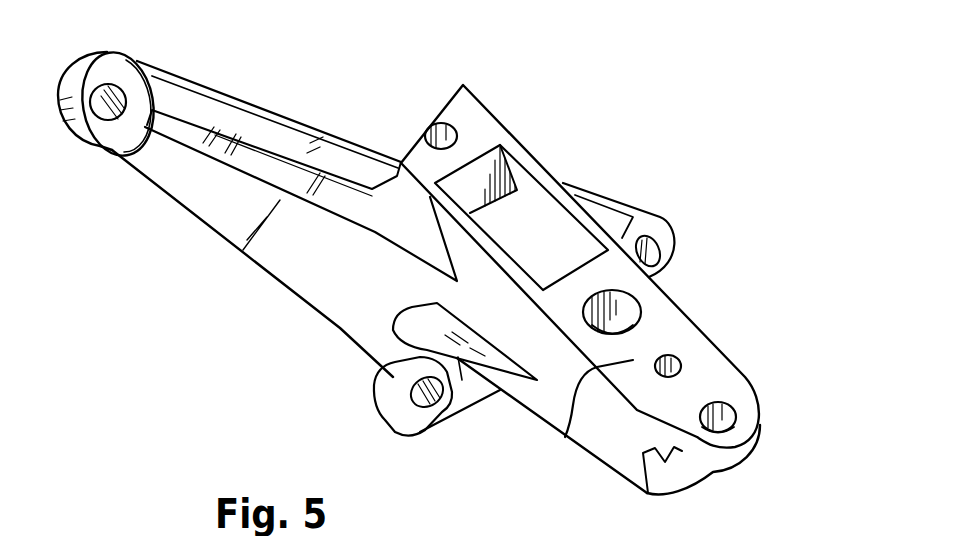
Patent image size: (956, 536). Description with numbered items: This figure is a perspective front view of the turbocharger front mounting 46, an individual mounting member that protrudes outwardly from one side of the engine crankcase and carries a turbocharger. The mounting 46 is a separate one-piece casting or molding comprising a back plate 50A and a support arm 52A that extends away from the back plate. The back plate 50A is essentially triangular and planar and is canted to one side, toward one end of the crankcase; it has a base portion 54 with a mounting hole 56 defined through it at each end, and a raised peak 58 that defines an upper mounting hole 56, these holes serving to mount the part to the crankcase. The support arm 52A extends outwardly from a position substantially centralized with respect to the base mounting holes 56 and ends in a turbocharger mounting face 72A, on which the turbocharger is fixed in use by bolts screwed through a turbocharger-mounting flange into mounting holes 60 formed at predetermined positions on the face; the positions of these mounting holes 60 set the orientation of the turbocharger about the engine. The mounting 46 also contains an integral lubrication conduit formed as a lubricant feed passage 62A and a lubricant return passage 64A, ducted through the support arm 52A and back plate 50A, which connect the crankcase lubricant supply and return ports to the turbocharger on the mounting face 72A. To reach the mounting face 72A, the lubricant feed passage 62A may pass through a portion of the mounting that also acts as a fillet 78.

The turbocharger front mounting 46 is at (553, 106).
The back plate 50A is at (322, 273).
The support arm 52A is at (632, 448).
The base portion 54 is at (497, 400).
The mounting hole 56 is at (128, 83).
The raised peak 58 is at (275, 107).
The mounting hole 60 is at (442, 124).
The lubricant feed passage 62A is at (677, 358).
The lubricant return passage 64A is at (637, 311).
The turbocharger mounting face 72A is at (573, 428).
The fillet 78 is at (218, 150).